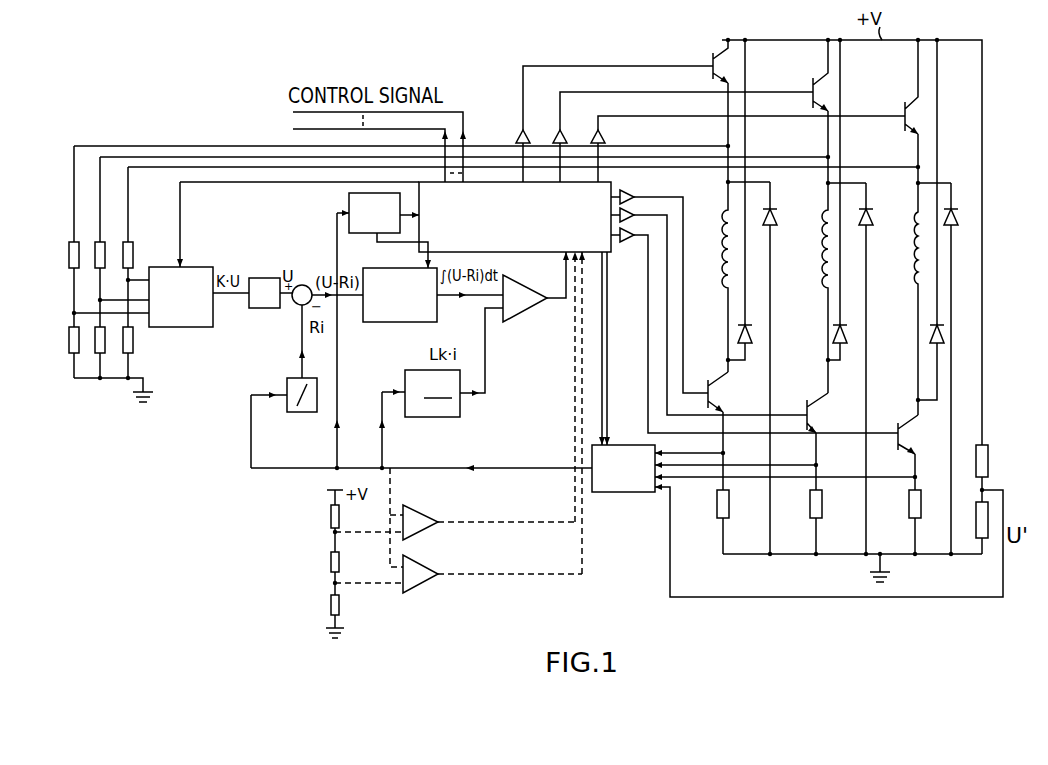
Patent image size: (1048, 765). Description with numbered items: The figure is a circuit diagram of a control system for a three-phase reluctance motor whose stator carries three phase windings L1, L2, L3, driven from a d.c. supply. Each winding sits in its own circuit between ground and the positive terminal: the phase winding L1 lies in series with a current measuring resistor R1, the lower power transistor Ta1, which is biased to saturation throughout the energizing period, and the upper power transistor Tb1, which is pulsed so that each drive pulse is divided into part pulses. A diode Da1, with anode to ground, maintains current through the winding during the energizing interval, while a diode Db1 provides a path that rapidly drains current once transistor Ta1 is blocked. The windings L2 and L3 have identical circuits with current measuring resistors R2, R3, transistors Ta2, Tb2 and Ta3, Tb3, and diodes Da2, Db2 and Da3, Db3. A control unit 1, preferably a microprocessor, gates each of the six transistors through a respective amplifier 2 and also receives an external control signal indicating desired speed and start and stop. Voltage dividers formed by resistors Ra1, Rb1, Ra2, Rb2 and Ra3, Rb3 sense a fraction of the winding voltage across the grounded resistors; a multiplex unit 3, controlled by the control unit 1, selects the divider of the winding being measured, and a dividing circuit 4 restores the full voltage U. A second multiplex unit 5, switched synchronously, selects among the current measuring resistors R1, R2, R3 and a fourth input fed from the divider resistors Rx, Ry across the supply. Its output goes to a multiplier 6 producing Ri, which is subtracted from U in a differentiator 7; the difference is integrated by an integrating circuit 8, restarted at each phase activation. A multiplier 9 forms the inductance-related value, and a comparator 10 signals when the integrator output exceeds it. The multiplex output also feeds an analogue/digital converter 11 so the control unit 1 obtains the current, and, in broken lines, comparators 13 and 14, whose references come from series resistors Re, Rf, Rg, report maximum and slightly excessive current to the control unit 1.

The control unit 1 is at (538, 252).
The amplifier 2 is at (520, 136).
The multiplex unit 3 is at (192, 327).
The dividing circuit 4 is at (265, 308).
The multiplex unit 5 is at (636, 492).
The multiplier 6 is at (300, 412).
The differentiator 7 is at (302, 275).
The integrating circuit 8 is at (397, 322).
The multiplier 9 is at (428, 417).
The comparator 10 is at (522, 312).
The analogue/digital converter 11 is at (349, 203).
The comparator 13 is at (416, 588).
The comparator 14 is at (420, 536).
The voltage divider resistor Rb1 is at (69, 257).
The voltage divider resistor Rb2 is at (95, 252).
The voltage divider resistor Rb3 is at (132, 252).
The grounded voltage divider resistor Ra1 is at (72, 350).
The grounded voltage divider resistor Ra2 is at (100, 349).
The grounded voltage divider resistor Ra3 is at (128, 350).
The power transistor Tb1 is at (713, 59).
The power transistor Tb2 is at (813, 87).
The power transistor Tb3 is at (905, 102).
The power transistor Ta1 is at (714, 396).
The power transistor Ta2 is at (812, 412).
The power transistor Ta3 is at (903, 440).
The phase winding L1 is at (722, 288).
The phase winding L2 is at (818, 288).
The phase winding L3 is at (909, 288).
The diode Da1 is at (777, 216).
The diode Da2 is at (873, 216).
The diode Da3 is at (960, 213).
The diode Db1 is at (750, 347).
The diode Db2 is at (845, 347).
The diode Db3 is at (942, 347).
The current measuring resistor R1 is at (717, 508).
The current measuring resistor R2 is at (811, 508).
The current measuring resistor R3 is at (908, 508).
The voltage divider resistor Rx is at (988, 472).
The voltage divider resistor Ry is at (976, 508).
The resistor Re is at (321, 518).
The resistor Rf is at (321, 562).
The resistor Rg is at (321, 605).